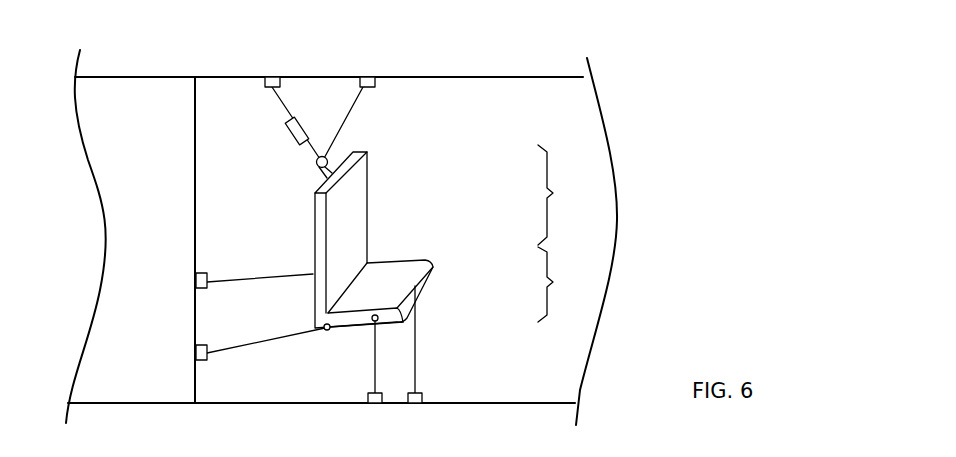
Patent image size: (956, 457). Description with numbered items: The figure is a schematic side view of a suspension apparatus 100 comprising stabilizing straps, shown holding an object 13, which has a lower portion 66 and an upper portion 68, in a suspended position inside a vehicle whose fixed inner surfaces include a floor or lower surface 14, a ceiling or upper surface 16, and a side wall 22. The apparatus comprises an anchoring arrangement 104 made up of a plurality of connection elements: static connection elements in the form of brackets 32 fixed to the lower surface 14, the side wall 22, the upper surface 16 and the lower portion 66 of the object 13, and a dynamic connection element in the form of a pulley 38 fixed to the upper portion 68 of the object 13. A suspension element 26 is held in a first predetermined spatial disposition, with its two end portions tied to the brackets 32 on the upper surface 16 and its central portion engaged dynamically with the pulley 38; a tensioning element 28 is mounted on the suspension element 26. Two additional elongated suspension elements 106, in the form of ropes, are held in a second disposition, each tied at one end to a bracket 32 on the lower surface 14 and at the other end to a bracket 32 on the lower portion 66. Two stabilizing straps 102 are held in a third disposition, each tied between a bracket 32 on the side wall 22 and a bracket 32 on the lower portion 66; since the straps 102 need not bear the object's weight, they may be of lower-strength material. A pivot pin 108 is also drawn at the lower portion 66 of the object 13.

The object 13 is at (388, 278).
The lower surface 14 is at (275, 405).
The upper surface 16 is at (141, 77).
The side wall 22 is at (194, 238).
The suspension element 26 is at (350, 124).
The tensioning element 28 is at (292, 138).
The brackets 32 is at (266, 87).
The pulley 38 is at (330, 158).
The lower portion 66 is at (565, 284).
The upper portion 68 is at (565, 195).
The suspension apparatus 100 is at (448, 113).
The stabilizing straps 102 is at (242, 276).
The anchoring arrangement 104 is at (365, 76).
The additional elongated suspension elements 106 is at (373, 377).
The pivot pin 108 is at (325, 325).